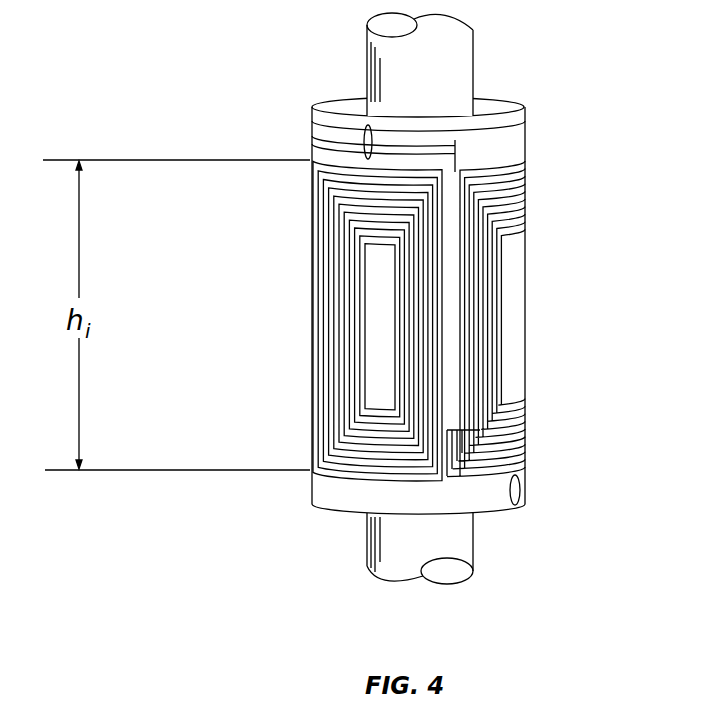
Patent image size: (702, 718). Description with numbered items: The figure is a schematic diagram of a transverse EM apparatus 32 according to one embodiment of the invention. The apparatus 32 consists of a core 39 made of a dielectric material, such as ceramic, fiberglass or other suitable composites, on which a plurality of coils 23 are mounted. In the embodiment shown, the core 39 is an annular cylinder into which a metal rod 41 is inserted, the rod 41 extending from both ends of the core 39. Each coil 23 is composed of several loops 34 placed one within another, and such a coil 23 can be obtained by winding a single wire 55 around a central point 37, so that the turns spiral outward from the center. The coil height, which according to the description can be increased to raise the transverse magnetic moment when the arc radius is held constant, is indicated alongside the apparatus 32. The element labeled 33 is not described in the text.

The core 39 is at (336, 97).
The metal rod 41 is at (473, 57).
The loops 34 is at (521, 155).
The coil 23 is at (527, 185).
The transverse EM apparatus 32 is at (312, 217).
The central point 37 is at (366, 349).
The coil 33 is at (338, 438).
The wire 55 is at (526, 490).